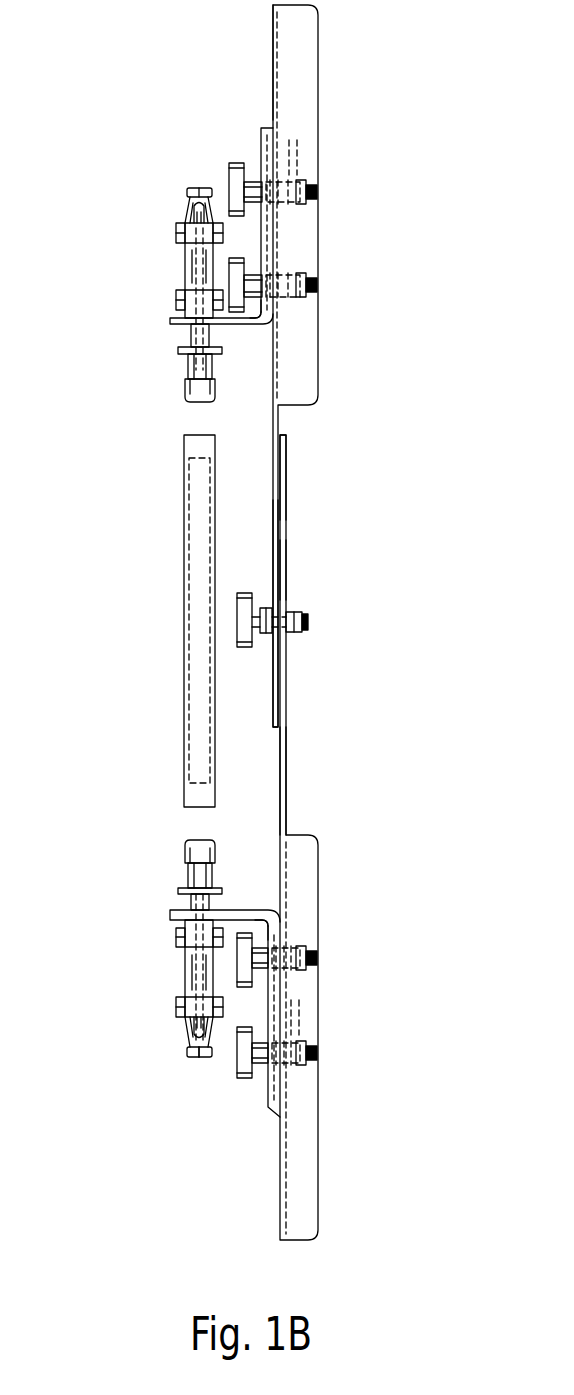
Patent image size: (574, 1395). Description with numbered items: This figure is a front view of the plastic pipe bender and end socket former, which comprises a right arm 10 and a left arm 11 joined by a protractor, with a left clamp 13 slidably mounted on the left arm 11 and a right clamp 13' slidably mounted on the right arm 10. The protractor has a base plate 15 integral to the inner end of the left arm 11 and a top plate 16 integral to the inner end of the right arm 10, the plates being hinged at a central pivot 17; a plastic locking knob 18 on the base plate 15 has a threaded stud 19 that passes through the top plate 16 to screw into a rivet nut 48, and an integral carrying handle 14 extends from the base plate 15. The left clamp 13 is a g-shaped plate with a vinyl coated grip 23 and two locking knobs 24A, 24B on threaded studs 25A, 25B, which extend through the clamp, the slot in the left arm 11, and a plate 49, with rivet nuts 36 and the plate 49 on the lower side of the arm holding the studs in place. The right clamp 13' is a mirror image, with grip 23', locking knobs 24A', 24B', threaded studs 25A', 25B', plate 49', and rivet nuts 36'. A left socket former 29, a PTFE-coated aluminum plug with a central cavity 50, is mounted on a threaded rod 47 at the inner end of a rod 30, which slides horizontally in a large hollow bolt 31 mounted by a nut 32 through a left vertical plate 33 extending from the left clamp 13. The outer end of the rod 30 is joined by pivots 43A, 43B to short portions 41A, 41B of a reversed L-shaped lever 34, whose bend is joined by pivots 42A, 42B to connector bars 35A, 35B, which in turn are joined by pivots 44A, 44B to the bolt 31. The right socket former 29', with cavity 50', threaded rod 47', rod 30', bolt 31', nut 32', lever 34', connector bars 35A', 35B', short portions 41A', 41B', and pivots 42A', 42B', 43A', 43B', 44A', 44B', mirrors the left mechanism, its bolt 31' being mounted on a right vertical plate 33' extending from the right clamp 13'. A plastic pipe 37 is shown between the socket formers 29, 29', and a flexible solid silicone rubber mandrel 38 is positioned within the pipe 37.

The right arm 10 is at (284, 413).
The left arm 11 is at (285, 790).
The left clamp 13 is at (333, 1060).
The right clamp 13' is at (331, 179).
The carrying handle 14 is at (285, 453).
The base plate 15 is at (285, 563).
The top plate 16 is at (273, 533).
The central pivot 17 is at (298, 635).
The locking knob 18 is at (237, 630).
The threaded stud 19 is at (307, 623).
The grip 23 is at (339, 837).
The grip 23' is at (336, 62).
The locking knob 24A is at (326, 888).
The locking knob 24A' is at (324, 360).
The locking knob 24B is at (221, 1134).
The locking knob 24B' is at (214, 110).
The threaded stud 25A is at (343, 938).
The threaded stud 25A' is at (345, 306).
The threaded stud 25B is at (333, 1060).
The threaded stud 25B' is at (330, 185).
The left socket former 29 is at (161, 858).
The right socket former 29' is at (157, 389).
The rod 30 is at (160, 979).
The rod 30' is at (158, 261).
The hollow bolt 31 is at (161, 975).
The hollow bolt 31' is at (159, 268).
The nut 32 is at (164, 896).
The nut 32' is at (161, 344).
The left vertical plate 33 is at (165, 915).
The right vertical plate 33' is at (159, 326).
The lever 34 is at (171, 1129).
The lever 34' is at (171, 115).
The connector bar 35A is at (130, 1008).
The connector bar 35A' is at (128, 233).
The connector bar 35B is at (331, 956).
The connector bar 35B' is at (329, 288).
The rivet nuts 36 is at (364, 1002).
The rivet nuts 36' is at (361, 245).
The plastic pipe 37 is at (184, 790).
The mandrel 38 is at (200, 688).
The short portion 41A is at (114, 1085).
The short portion 41A' is at (114, 156).
The short portion 41B is at (307, 1022).
The short portion 41B' is at (310, 227).
The pivot 42A is at (119, 1064).
The pivot 42A' is at (118, 178).
The pivot 42B is at (333, 997).
The pivot 42B' is at (336, 246).
The pivot 43A is at (144, 1110).
The pivot 43A' is at (149, 147).
The pivot 43B is at (334, 1039).
The pivot 43B' is at (332, 207).
The pivot 44A is at (130, 948).
The pivot 44A' is at (129, 293).
The pivot 44B is at (251, 908).
The pivot 44B' is at (249, 339).
The threaded rod 47 is at (126, 939).
The threaded rod 47' is at (124, 317).
The rivet nut 48 is at (302, 613).
The plate 49 is at (345, 1073).
The plate 49' is at (346, 135).
The central cavity 50 is at (229, 857).
The central cavity 50' is at (231, 389).